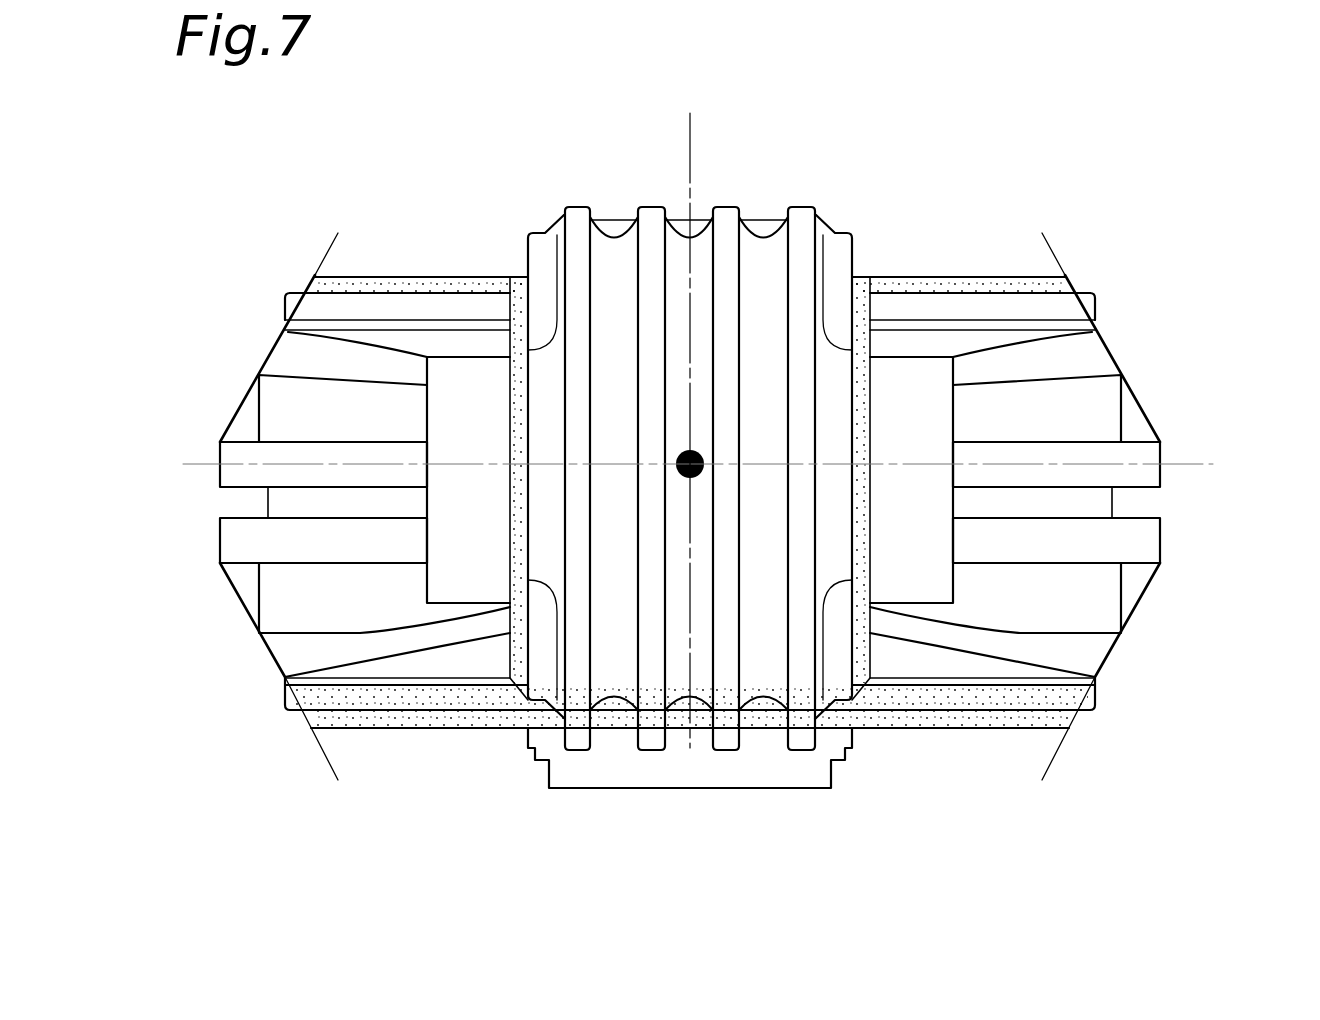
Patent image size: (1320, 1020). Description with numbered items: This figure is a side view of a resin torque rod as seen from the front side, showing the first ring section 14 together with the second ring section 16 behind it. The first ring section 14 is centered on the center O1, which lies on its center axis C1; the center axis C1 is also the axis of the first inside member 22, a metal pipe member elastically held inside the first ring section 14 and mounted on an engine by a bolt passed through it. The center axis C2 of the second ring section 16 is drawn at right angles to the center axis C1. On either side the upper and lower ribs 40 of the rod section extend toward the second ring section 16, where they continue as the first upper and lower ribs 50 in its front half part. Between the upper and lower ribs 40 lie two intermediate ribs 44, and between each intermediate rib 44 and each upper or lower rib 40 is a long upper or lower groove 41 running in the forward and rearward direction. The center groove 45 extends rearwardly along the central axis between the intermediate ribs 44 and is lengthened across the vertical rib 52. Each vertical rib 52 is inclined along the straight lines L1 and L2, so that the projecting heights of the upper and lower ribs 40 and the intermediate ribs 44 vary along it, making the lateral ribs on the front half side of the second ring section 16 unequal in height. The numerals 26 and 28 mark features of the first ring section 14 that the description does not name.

The first ring section 14 is at (848, 222).
The second ring section 16 is at (247, 282).
The first inside member 22 is at (922, 357).
The recess 26 is at (541, 232).
The projection 28 is at (578, 206).
The upper and lower ribs 40 is at (419, 338).
The upper and lower grooves 41 is at (262, 378).
The intermediate ribs 44 is at (249, 457).
The center groove 45 is at (222, 510).
The first upper and lower ribs 50 is at (383, 327).
The vertical rib 52 is at (240, 612).
The center of the first ring section O1 is at (700, 455).
The center axis of the first ring section C1 is at (684, 463).
The center axis of the second ring section C2 is at (689, 417).
The straight line L1 is at (690, 238).
The straight line L2 is at (690, 743).